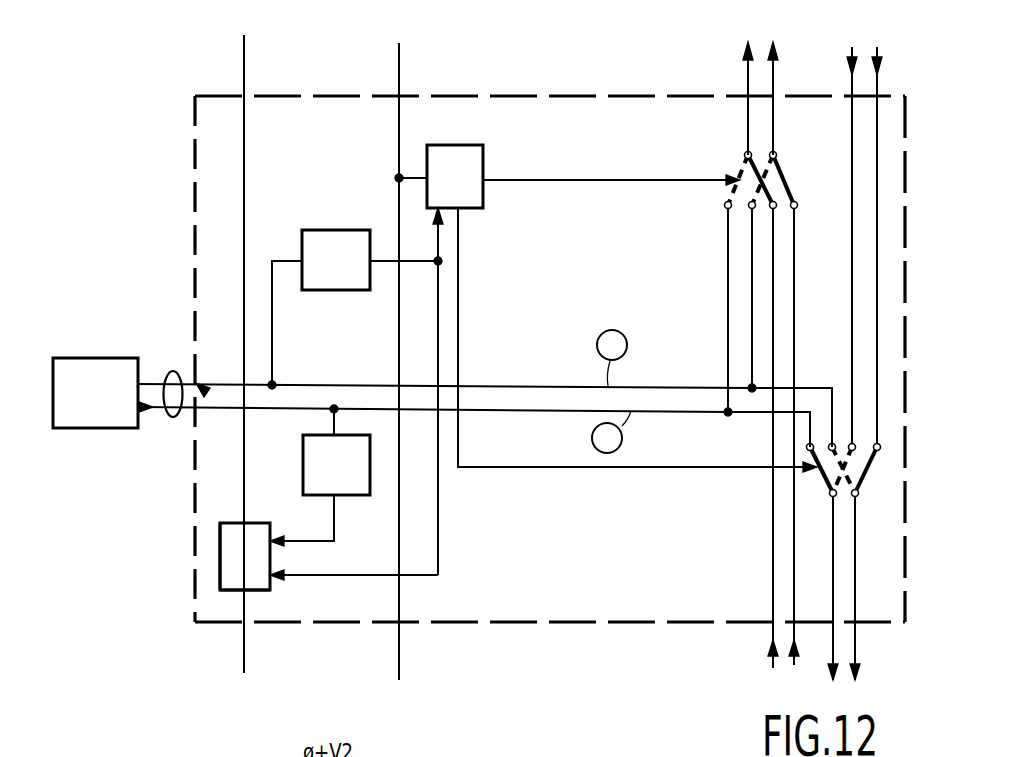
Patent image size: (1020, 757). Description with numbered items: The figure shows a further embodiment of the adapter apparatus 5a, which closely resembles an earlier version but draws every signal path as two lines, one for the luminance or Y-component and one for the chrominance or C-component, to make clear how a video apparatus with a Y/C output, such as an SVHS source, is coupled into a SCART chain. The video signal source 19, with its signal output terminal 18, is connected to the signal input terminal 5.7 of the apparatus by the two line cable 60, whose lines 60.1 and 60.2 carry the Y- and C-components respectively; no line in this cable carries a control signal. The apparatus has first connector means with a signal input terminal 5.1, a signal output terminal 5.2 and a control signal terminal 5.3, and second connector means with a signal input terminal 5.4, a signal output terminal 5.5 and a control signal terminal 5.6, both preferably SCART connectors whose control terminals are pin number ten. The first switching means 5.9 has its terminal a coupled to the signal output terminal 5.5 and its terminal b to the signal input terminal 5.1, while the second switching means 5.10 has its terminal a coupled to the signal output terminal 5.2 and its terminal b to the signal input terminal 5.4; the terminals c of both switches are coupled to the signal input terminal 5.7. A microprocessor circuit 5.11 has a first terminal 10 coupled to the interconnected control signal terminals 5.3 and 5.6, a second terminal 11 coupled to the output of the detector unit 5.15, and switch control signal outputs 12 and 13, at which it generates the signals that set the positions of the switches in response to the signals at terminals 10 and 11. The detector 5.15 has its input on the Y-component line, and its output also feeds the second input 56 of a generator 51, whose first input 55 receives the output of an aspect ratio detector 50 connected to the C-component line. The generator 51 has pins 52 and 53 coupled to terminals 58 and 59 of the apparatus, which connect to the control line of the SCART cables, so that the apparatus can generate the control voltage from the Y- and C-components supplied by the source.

The adapter apparatus 5a is at (557, 95).
The terminal 58 is at (243, 95).
The terminal 59 is at (245, 622).
The control signal terminal 5.3 is at (398, 95).
The control signal terminal 5.6 is at (399, 622).
The microprocessor circuit 5.11 is at (467, 158).
The first terminal 10 is at (426, 176).
The switch control signal output 13 is at (485, 175).
The second terminal 11 is at (436, 212).
The switch control signal output 12 is at (460, 212).
The detector unit 5.15 is at (340, 240).
The second switching means 5.10 is at (773, 182).
The signal output terminal 5.2 is at (757, 85).
The signal input terminal 5.1 is at (863, 85).
The first switching means 5.9 is at (845, 445).
The signal input terminal 5.4 is at (780, 628).
The signal output terminal 5.5 is at (843, 632).
The video signal source 19 is at (70, 375).
The line 60.1 is at (151, 383).
The line 60.2 is at (157, 410).
The two line cable 60 is at (171, 370).
The signal input terminal 5.7 is at (200, 383).
The signal output terminal 18 is at (148, 410).
The aspect ratio detector 50 is at (313, 455).
The first input 55 is at (272, 541).
The second input 56 is at (272, 578).
The pin 52 is at (243, 522).
The generator 51 is at (222, 546).
The pin 53 is at (243, 592).